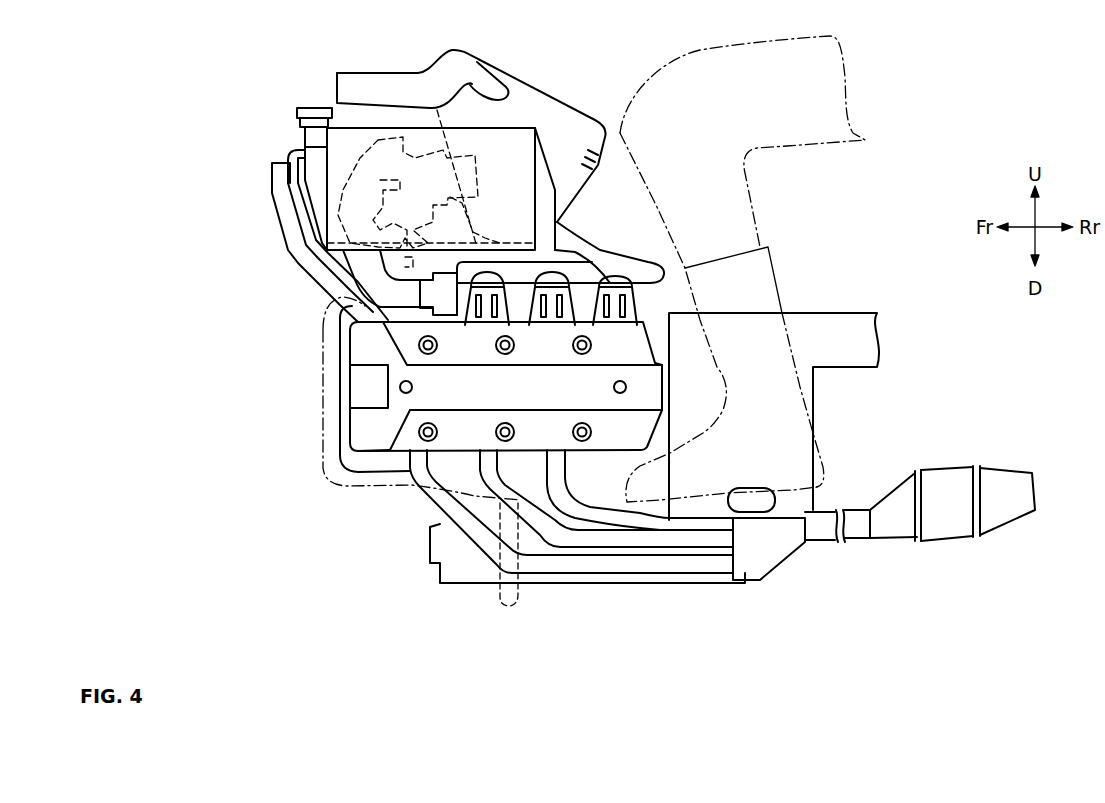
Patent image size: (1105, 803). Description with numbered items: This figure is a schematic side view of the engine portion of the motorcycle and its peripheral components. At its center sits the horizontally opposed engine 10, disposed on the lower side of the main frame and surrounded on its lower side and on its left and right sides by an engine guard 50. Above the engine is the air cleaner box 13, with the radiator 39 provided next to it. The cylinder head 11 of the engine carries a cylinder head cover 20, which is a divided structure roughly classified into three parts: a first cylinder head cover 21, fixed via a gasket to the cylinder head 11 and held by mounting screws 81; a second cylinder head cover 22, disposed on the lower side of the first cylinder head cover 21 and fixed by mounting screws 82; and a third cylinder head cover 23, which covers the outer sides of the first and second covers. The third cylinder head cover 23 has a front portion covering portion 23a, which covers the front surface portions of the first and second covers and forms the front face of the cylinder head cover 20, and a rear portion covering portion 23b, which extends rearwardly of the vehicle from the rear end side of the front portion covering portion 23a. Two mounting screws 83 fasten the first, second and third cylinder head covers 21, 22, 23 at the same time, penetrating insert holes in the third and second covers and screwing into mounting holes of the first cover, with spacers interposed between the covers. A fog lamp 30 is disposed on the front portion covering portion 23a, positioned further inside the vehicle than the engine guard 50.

The horizontally opposed engine 10 is at (417, 575).
The cylinder head 11 is at (440, 458).
The air cleaner box 13 is at (527, 110).
The cylinder head cover 20 is at (238, 330).
The first cylinder head cover 21 is at (400, 340).
The second cylinder head cover 22 is at (410, 433).
The third cylinder head cover 23 is at (362, 355).
The front portion covering portion 23a is at (373, 437).
The rear portion covering portion 23b is at (538, 388).
The fog lamp 30 is at (360, 388).
The radiator 39 is at (320, 148).
The engine guard 50 is at (325, 452).
The mounting screws 81 is at (582, 345).
The mounting screws 82 is at (583, 434).
The mounting screws 83 is at (412, 387).